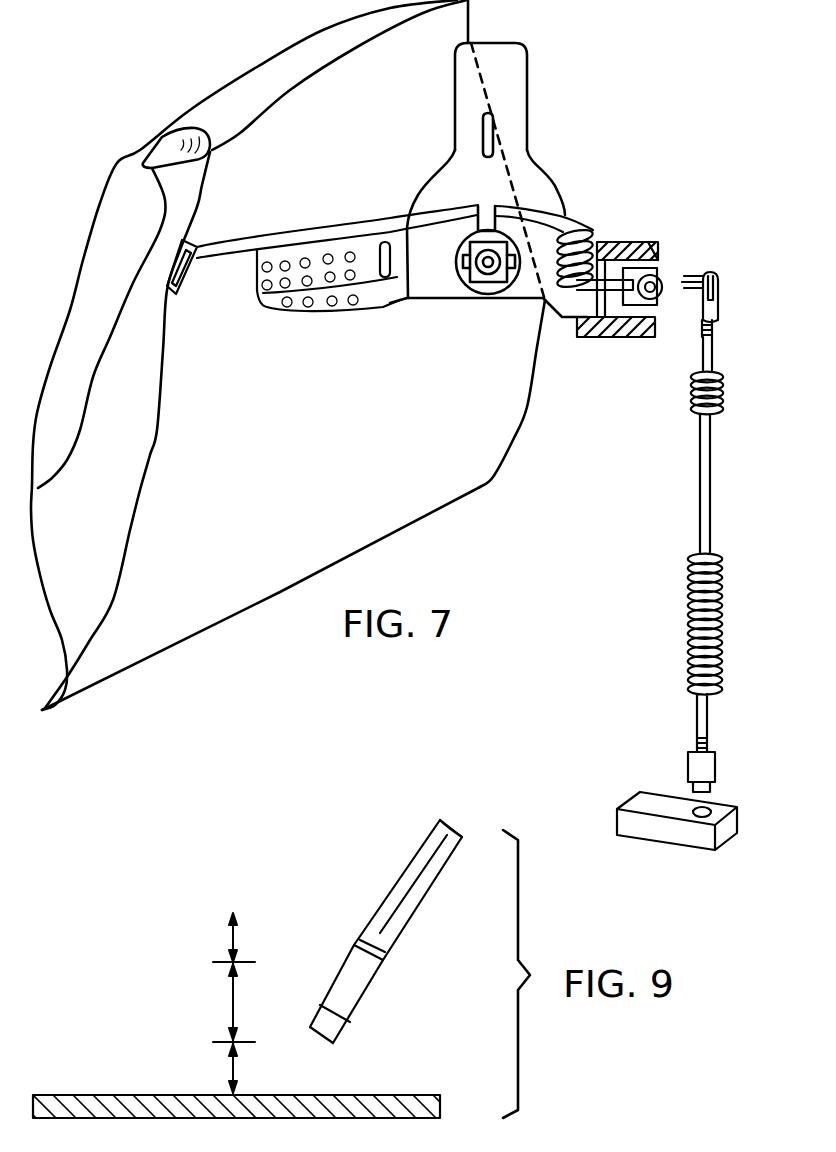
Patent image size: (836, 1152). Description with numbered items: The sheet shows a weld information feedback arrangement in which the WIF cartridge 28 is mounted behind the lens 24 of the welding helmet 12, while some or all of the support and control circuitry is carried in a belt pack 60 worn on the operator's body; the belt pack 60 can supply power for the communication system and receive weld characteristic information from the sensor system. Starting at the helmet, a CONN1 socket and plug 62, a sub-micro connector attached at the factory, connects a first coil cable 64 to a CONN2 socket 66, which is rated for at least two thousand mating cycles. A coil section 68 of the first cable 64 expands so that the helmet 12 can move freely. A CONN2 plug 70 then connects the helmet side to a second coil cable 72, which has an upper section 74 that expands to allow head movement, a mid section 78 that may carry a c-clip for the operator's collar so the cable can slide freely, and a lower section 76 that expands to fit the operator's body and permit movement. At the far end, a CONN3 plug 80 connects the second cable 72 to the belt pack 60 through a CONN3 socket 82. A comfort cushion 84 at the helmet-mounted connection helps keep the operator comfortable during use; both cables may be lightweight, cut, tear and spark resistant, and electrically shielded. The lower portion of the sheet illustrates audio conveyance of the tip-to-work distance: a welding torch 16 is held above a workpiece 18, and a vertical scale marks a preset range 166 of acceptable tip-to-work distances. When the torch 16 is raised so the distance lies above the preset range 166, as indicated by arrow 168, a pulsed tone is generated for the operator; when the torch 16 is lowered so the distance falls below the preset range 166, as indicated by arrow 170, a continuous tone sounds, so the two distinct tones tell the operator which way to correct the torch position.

In FIG. 7, the welding helmet 12 is at (313, 30).
In FIG. 7, the lens 24 is at (68, 313).
In FIG. 7, the WIF cartridge 28 is at (180, 290).
In FIG. 7, the CONN1 socket and plug 62 is at (186, 245).
In FIG. 7, the first coil cable 64 is at (548, 213).
In FIG. 7, the CONN2 socket 66 is at (656, 243).
In FIG. 7, the coil section 68 is at (588, 233).
In FIG. 7, the CONN2 plug 70 is at (691, 270).
In FIG. 7, the second coil cable 72 is at (721, 535).
In FIG. 7, the upper section 74 is at (722, 386).
In FIG. 7, the lower section 76 is at (719, 628).
In FIG. 7, the mid section 78 is at (698, 492).
In FIG. 7, the CONN3 plug 80 is at (688, 768).
In FIG. 7, the CONN3 socket 82 is at (706, 810).
In FIG. 7, the comfort cushion 84 is at (600, 336).
In FIG. 7, the belt pack 60 is at (690, 835).
In FIG. 9, the welding torch 16 is at (413, 907).
In FIG. 9, the workpiece 18 is at (432, 1093).
In FIG. 9, the preset range 166 is at (235, 1002).
In FIG. 9, the arrow 168 is at (232, 944).
In FIG. 9, the arrow 170 is at (233, 1063).